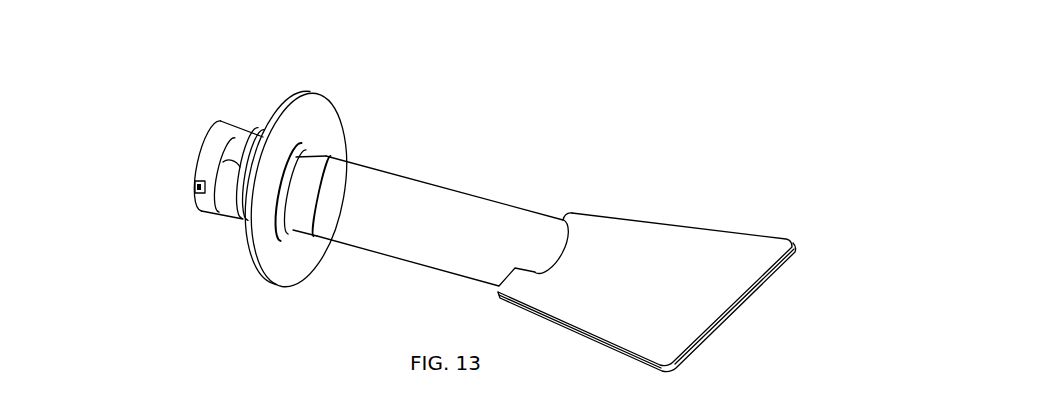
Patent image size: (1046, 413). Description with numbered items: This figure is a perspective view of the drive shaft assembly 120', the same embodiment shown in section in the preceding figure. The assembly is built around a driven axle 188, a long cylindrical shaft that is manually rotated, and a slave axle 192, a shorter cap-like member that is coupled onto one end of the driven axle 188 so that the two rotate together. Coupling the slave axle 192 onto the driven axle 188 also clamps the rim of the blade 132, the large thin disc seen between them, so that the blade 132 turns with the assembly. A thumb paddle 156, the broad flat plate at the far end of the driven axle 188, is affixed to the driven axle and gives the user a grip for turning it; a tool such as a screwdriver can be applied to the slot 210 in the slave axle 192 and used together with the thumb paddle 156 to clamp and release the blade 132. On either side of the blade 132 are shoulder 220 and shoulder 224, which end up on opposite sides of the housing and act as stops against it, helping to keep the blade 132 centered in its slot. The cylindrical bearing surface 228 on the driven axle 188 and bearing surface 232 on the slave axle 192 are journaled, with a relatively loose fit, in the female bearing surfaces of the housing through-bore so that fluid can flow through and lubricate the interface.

The drive shaft assembly 120' is at (594, 113).
The blade 132 is at (322, 117).
The thumb paddle 156 is at (737, 260).
The driven axle 188 is at (452, 208).
The slave axle 192 is at (228, 146).
The slot 210 is at (194, 189).
The shoulder 220 is at (257, 137).
The shoulder 224 is at (318, 236).
The bearing surface 228 is at (306, 197).
The bearing surface 232 is at (200, 195).